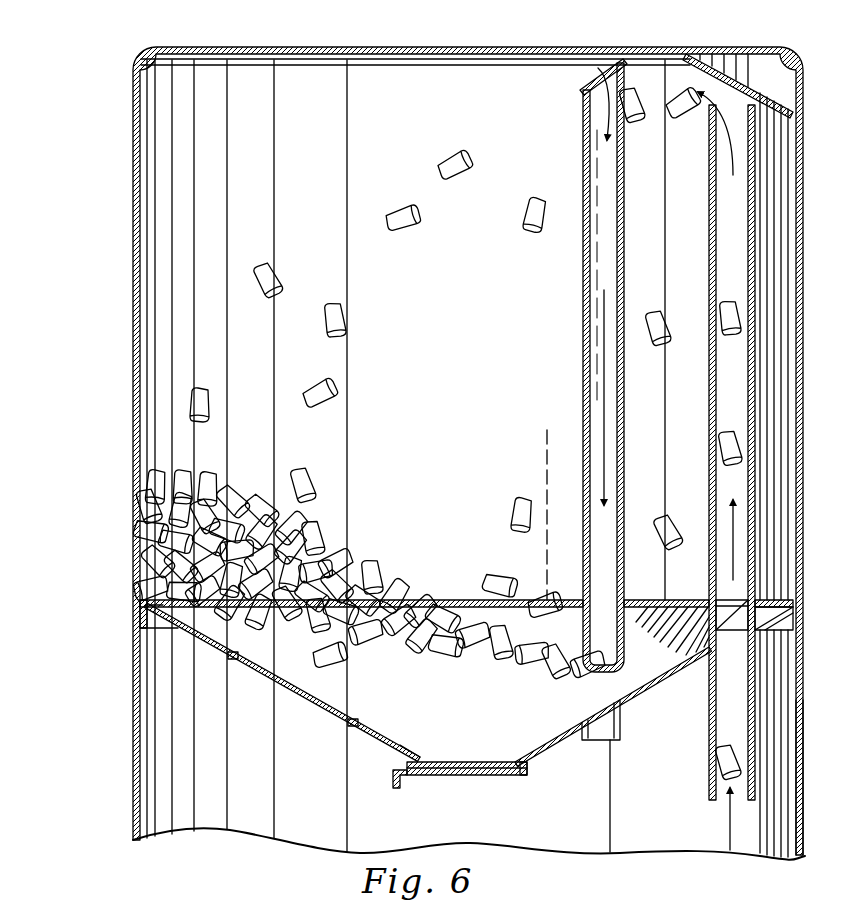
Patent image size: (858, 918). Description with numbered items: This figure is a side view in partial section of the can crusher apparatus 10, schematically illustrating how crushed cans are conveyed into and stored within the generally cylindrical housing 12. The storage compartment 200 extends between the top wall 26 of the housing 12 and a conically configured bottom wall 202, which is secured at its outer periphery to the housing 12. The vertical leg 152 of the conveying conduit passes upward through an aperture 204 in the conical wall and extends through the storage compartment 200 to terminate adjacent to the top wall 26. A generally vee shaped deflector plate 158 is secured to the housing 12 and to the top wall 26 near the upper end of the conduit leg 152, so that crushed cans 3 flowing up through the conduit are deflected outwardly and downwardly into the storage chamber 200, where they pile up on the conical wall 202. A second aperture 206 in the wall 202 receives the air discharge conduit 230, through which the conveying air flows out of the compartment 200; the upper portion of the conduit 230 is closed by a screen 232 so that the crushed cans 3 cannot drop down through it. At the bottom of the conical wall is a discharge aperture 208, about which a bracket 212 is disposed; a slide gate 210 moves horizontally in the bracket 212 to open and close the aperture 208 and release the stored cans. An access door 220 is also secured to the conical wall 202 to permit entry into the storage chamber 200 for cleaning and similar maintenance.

The can crusher apparatus 10 is at (606, 36).
The housing 12 is at (798, 750).
The top wall 26 is at (405, 47).
The deflector plate 158 is at (788, 95).
The storage compartment 200 is at (168, 203).
The air discharge conduit 230 is at (590, 272).
The screen 232 is at (578, 99).
The aperture 204 is at (745, 649).
The vertical leg of the conduit 152 is at (709, 766).
The aperture 206 is at (622, 660).
The access door 220 is at (289, 696).
The discharge aperture 208 is at (405, 741).
The conical bottom wall 202 is at (650, 685).
The slide gate 210 is at (460, 777).
The bracket 212 is at (503, 777).
The crushed cans 3 is at (318, 540).